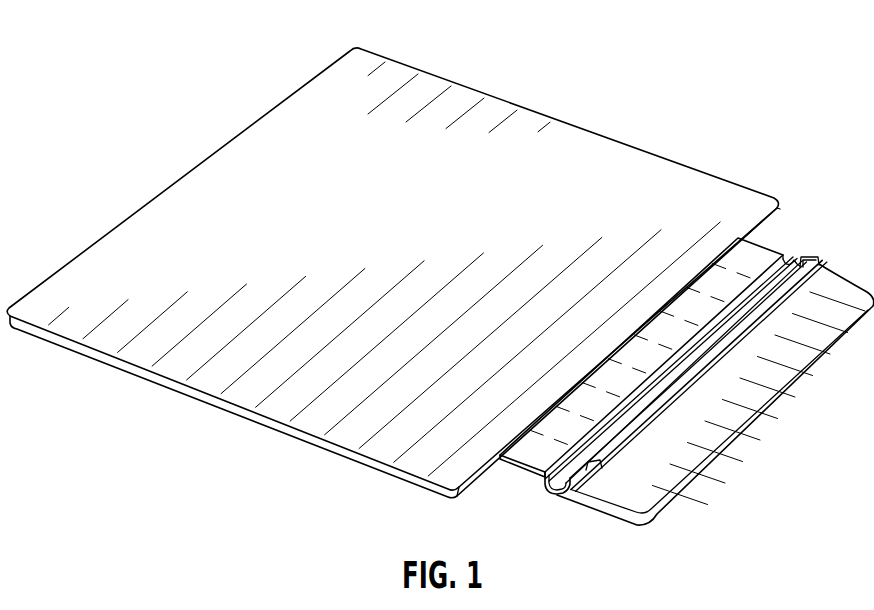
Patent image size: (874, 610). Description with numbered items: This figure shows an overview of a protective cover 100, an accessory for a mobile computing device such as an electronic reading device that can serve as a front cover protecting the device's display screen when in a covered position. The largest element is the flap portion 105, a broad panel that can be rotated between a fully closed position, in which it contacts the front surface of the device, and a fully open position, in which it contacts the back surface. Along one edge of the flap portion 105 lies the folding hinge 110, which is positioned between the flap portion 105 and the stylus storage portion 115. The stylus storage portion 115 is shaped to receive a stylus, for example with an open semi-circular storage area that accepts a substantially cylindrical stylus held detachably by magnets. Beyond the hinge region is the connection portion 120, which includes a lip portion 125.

The protective cover 100 is at (152, 36).
The flap portion 105 is at (565, 135).
The folding hinge 110 is at (762, 263).
The stylus storage portion 115 is at (547, 483).
The connection portion 120 is at (778, 357).
The lip portion 125 is at (808, 259).